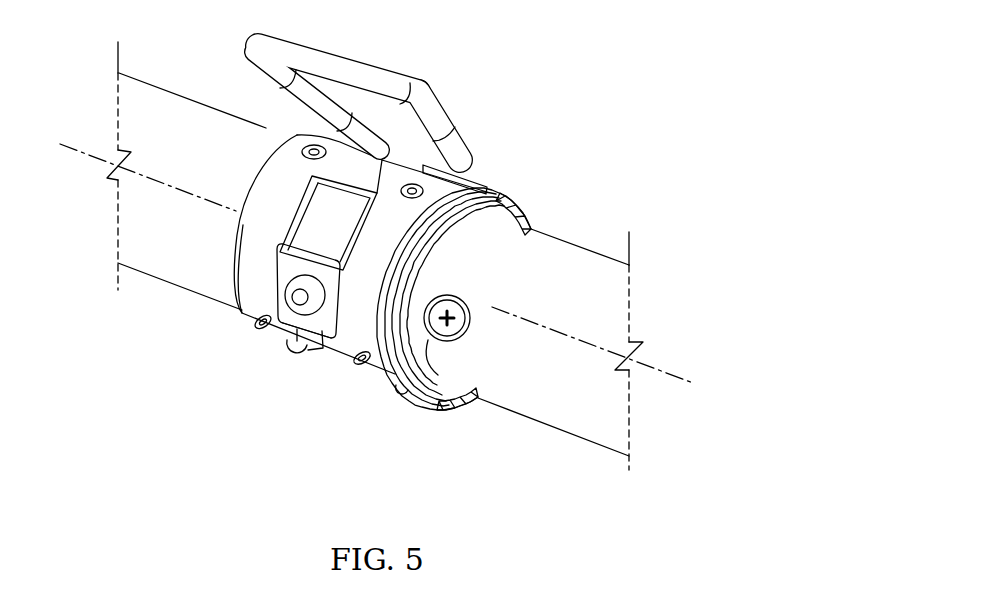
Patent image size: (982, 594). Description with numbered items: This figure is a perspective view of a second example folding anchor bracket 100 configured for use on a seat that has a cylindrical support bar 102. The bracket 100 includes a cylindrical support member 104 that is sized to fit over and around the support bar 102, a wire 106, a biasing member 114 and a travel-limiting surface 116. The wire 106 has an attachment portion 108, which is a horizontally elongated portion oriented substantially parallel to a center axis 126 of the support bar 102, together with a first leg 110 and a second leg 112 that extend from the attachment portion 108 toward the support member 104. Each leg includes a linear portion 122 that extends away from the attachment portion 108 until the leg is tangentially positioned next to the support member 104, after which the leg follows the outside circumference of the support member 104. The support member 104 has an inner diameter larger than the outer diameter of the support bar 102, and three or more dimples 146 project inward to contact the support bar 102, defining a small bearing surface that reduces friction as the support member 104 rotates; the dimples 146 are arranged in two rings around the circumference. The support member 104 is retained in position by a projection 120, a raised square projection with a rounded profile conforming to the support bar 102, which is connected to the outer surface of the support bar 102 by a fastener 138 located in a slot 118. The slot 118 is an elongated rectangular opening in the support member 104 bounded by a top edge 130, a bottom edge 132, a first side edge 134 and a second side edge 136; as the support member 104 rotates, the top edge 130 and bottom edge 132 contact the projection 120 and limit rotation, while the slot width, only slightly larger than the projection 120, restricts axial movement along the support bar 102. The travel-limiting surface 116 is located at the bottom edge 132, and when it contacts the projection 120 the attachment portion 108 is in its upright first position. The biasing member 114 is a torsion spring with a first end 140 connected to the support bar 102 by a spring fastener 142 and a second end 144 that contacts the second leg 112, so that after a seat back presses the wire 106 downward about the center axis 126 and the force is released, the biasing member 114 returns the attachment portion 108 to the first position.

The folding anchor bracket 100 is at (371, 230).
The support bar 102 is at (160, 268).
The support member 104 is at (277, 193).
The wire 106 is at (367, 92).
The attachment portion 108 is at (330, 62).
The first leg 110 is at (272, 68).
The second leg 112 is at (450, 118).
The biasing member 114 is at (460, 240).
The travel-limiting surface 116 is at (322, 348).
The slot 118 is at (273, 243).
The projection 120 is at (283, 320).
The linear portion 122 is at (272, 88).
The center axis 126 is at (680, 383).
The top edge 130 is at (362, 187).
The bottom edge 132 is at (293, 348).
The first side edge 134 is at (288, 218).
The second side edge 136 is at (375, 235).
The fastener 138 is at (285, 293).
The first end 140 is at (430, 360).
The spring fastener 142 is at (457, 332).
The second end 144 is at (487, 187).
The dimples 146 is at (300, 153).